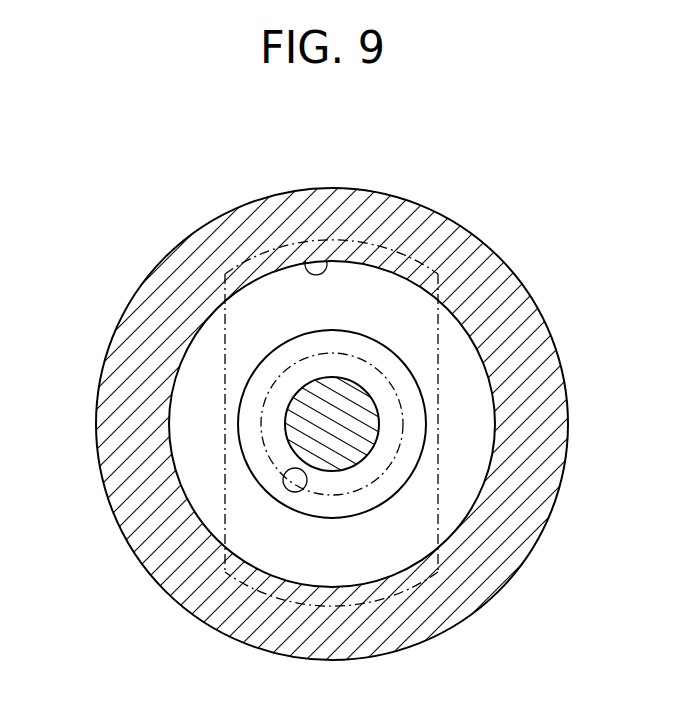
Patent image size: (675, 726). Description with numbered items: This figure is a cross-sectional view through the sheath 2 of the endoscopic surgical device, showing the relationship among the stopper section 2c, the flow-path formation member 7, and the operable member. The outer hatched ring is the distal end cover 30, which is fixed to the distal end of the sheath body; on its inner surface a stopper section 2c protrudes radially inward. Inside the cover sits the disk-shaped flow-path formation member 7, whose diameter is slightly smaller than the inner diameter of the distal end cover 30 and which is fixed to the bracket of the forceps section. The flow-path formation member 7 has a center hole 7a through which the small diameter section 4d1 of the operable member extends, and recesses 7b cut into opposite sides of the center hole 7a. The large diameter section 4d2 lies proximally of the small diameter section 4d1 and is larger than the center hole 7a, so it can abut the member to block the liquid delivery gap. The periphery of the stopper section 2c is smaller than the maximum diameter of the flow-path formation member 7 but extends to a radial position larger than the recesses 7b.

The sheath 2 is at (186, 218).
The stopper section 2c is at (330, 259).
The distal end cover 30 is at (447, 217).
The small diameter section 4d1 is at (310, 381).
The large diameter section 4d2 is at (240, 393).
The flow-path formation member 7 is at (458, 404).
The center hole 7a is at (281, 472).
The recesses 7b is at (225, 511).